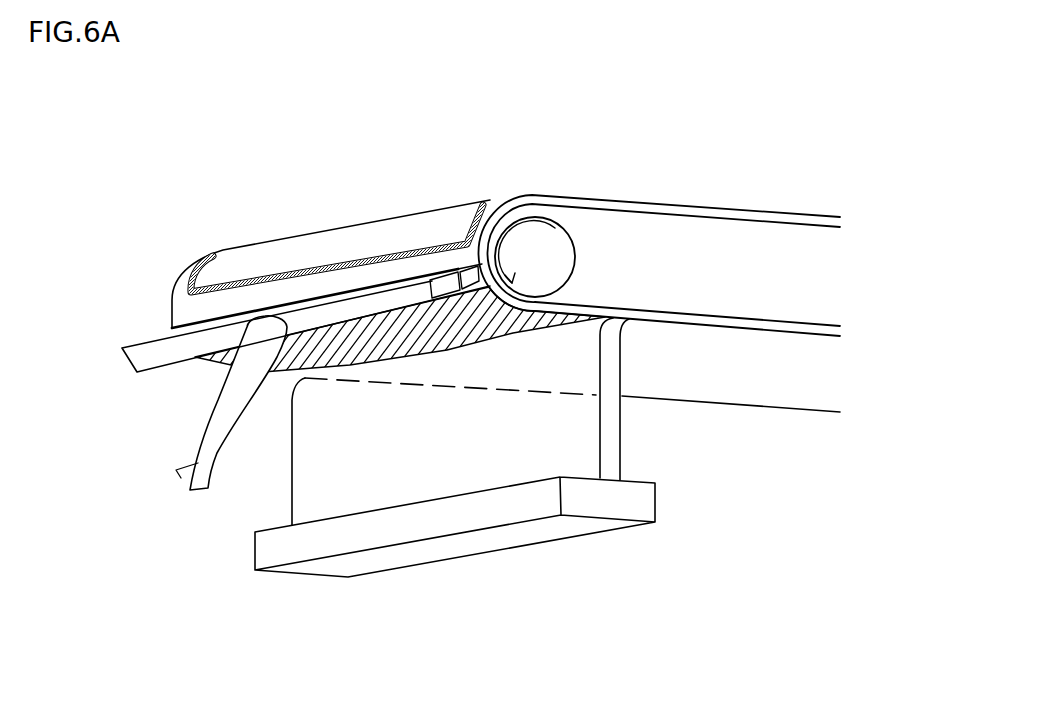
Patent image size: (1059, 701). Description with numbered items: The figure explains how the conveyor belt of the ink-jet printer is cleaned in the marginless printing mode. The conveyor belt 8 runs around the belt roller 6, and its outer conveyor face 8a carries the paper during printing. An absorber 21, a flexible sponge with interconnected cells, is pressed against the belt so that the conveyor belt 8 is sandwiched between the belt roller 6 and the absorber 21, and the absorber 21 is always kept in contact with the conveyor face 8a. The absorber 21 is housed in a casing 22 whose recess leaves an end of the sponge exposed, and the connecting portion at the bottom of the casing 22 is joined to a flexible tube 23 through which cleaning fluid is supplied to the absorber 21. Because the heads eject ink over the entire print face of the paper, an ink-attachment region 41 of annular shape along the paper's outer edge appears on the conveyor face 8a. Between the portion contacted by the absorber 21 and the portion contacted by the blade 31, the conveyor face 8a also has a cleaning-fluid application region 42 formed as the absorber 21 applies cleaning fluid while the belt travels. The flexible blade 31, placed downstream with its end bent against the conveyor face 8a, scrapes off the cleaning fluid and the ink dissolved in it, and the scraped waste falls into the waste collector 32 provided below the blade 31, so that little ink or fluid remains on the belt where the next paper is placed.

The belt roller 6 is at (552, 224).
The conveyor belt 8 is at (718, 207).
The conveyor face 8a is at (778, 387).
The absorber 21 is at (463, 267).
The casing 22 is at (138, 372).
The flexible tube 23 is at (180, 475).
The blade 31 is at (612, 433).
The waste collector 32 is at (608, 500).
The ink-attachment region 41 is at (328, 262).
The cleaning-fluid application region 42 is at (283, 360).